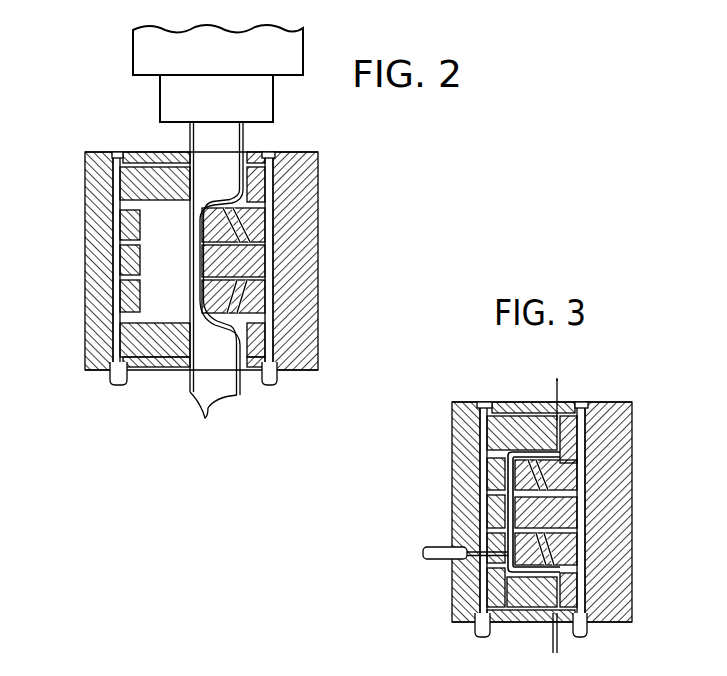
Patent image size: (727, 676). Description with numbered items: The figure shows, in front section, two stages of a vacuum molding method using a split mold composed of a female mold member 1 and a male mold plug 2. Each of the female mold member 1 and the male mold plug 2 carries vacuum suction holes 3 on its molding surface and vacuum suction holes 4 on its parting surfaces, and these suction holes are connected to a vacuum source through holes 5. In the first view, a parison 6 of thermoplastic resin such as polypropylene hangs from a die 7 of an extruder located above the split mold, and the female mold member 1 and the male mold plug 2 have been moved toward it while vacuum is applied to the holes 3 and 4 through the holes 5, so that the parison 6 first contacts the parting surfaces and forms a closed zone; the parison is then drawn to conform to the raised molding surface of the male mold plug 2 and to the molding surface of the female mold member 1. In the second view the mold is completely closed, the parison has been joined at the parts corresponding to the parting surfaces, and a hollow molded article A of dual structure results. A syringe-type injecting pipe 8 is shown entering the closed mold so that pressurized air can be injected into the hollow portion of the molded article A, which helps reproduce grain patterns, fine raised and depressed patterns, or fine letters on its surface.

In FIG. 2, the female mold member 1 is at (88, 352).
In FIG. 2, the male mold plug 2 is at (318, 358).
In FIG. 2, the vacuum suction holes 3 is at (253, 245).
In FIG. 3, the vacuum suction holes 3 is at (500, 472).
In FIG. 2, the vacuum suction holes 4 is at (155, 160).
In FIG. 3, the vacuum suction holes 4 is at (508, 403).
In FIG. 2, the holes 5 is at (115, 262).
In FIG. 3, the holes 5 is at (600, 410).
In FIG. 2, the parison 6 is at (216, 286).
In FIG. 2, the die 7 is at (270, 89).
In FIG. 3, the syringe-type injecting pipe 8 is at (472, 558).
In FIG. 3, the hollow molded article A is at (512, 578).